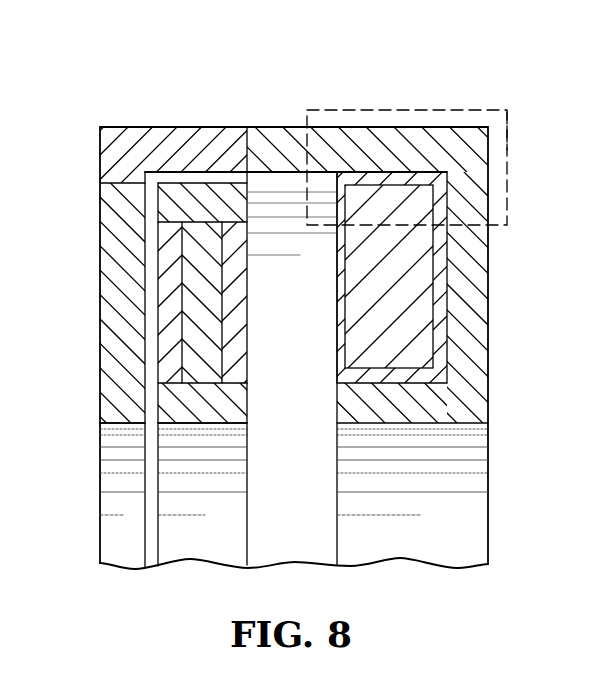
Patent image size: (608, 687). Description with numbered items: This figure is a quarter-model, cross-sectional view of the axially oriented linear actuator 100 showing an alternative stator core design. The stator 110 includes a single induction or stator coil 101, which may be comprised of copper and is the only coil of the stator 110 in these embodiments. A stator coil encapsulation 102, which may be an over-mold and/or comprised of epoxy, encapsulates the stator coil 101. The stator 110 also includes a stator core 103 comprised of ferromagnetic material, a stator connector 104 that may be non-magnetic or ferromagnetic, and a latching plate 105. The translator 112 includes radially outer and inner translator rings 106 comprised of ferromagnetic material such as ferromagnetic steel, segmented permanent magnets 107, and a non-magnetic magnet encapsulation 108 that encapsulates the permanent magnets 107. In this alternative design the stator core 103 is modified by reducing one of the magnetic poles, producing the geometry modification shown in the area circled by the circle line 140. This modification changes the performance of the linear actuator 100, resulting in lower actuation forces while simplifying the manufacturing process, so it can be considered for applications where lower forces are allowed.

The linear actuator 100 is at (170, 65).
The stator coil 101 is at (390, 332).
The stator coil encapsulation 102 is at (445, 314).
The stator core 103 is at (395, 110).
The stator connector 104 is at (148, 127).
The latching plate 105 is at (100, 257).
The translator rings 106 is at (214, 205).
The segmented permanent magnets 107 is at (200, 293).
The magnet encapsulation 108 is at (233, 332).
The stator 110 is at (417, 453).
The translator 112 is at (200, 453).
The circle line 140 is at (510, 143).